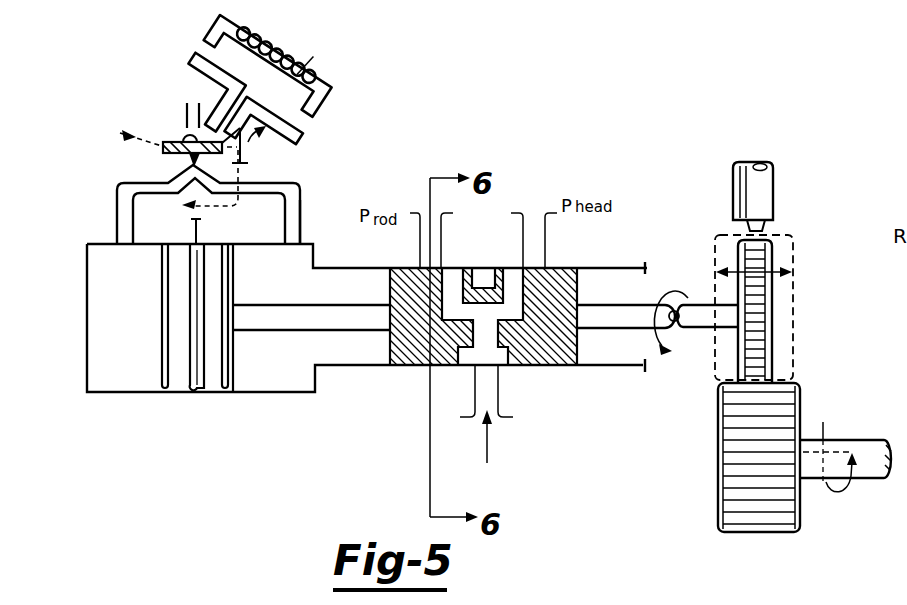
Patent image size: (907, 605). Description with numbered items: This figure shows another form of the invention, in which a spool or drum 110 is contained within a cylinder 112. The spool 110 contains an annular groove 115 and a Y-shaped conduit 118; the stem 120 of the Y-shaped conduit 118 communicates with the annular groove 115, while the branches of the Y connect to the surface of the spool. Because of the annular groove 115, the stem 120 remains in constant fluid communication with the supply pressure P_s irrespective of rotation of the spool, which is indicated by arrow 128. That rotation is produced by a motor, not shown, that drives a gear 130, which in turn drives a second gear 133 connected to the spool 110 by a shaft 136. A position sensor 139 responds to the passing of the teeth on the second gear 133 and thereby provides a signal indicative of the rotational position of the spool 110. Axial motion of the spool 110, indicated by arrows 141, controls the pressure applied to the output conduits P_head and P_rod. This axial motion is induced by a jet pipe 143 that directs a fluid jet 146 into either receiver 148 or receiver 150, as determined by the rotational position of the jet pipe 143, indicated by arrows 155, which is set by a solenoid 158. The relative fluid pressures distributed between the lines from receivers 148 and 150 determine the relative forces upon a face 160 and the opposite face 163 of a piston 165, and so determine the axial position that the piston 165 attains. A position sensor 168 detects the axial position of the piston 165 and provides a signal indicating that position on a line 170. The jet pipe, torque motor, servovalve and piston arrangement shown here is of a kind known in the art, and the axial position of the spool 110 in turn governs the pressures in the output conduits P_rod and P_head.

The spool 110 is at (417, 368).
The cylinder 112 is at (360, 350).
The annular groove 115 is at (503, 367).
The Y-shaped conduit 118 is at (517, 278).
The stem 120 is at (497, 333).
The arrow 128 is at (670, 290).
The gear 130 is at (718, 468).
The second gear 133 is at (773, 259).
The shaft 136 is at (702, 322).
The position sensor 139 is at (765, 206).
The arrows 141 is at (771, 293).
The jet pipe 143 is at (186, 118).
The fluid jet 146 is at (190, 158).
The receiver 148 is at (117, 213).
The receiver 150 is at (300, 215).
The arrows 155 is at (148, 132).
The solenoid 158 is at (440, 64).
The face 160 is at (162, 367).
The opposite face 163 is at (232, 372).
The piston 165 is at (210, 388).
The position sensor 168 is at (203, 219).
The line 170 is at (187, 186).